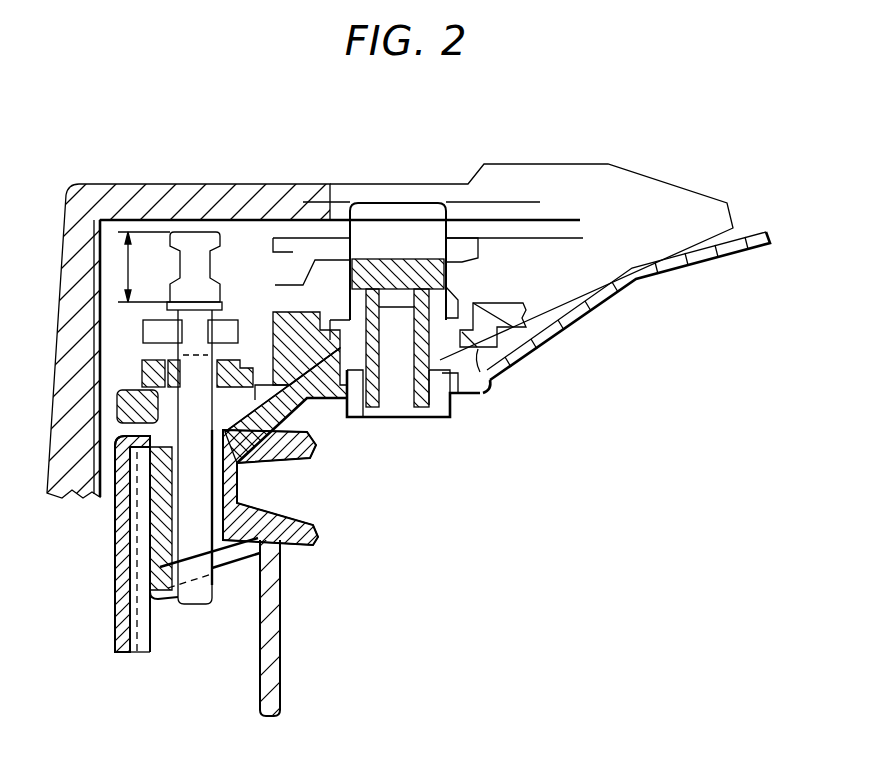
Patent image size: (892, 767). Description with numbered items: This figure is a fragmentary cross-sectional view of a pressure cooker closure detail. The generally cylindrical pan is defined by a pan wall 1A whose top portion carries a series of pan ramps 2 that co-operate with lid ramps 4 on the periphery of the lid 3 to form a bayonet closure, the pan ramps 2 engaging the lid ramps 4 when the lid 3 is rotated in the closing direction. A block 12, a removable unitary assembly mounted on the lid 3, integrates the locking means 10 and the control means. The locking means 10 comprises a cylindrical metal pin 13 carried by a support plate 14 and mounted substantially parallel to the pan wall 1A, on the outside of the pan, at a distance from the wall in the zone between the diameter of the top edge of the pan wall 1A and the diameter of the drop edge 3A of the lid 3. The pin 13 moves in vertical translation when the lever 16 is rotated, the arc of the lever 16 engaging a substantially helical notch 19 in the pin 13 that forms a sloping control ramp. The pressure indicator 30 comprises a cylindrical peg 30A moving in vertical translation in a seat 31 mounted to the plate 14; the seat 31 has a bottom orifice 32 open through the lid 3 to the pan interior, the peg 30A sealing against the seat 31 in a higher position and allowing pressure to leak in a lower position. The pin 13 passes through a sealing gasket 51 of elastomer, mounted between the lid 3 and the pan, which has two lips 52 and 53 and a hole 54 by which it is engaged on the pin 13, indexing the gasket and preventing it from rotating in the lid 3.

The pan wall 1A is at (272, 660).
The pan ramps 2 is at (238, 557).
The lid 3 is at (688, 262).
The drop edge 3A is at (118, 607).
The lid ramps 4 is at (155, 600).
The locking means 10 is at (252, 262).
The block 12 is at (137, 190).
The pin 13 is at (145, 378).
The support plate 14 is at (120, 412).
The lever 16 is at (150, 334).
The notch 19 is at (168, 316).
The pressure indicator 30 is at (413, 200).
The cylindrical peg 30A is at (452, 290).
The seat 31 is at (489, 383).
The bottom orifice 32 is at (433, 419).
The sealing gasket 51 is at (262, 468).
The lip 52 is at (304, 440).
The lip 53 is at (304, 540).
The hole 54 is at (172, 522).